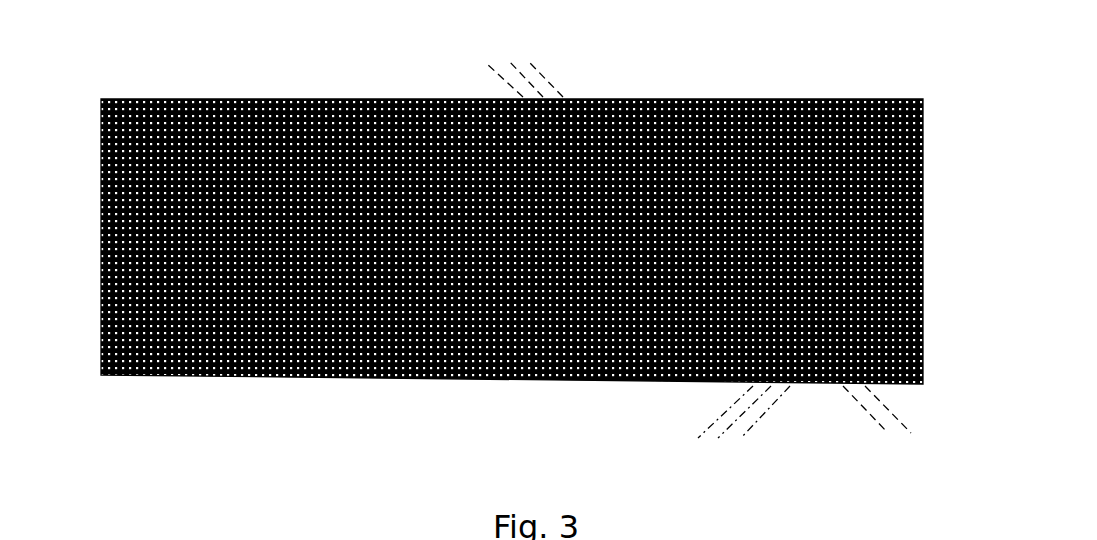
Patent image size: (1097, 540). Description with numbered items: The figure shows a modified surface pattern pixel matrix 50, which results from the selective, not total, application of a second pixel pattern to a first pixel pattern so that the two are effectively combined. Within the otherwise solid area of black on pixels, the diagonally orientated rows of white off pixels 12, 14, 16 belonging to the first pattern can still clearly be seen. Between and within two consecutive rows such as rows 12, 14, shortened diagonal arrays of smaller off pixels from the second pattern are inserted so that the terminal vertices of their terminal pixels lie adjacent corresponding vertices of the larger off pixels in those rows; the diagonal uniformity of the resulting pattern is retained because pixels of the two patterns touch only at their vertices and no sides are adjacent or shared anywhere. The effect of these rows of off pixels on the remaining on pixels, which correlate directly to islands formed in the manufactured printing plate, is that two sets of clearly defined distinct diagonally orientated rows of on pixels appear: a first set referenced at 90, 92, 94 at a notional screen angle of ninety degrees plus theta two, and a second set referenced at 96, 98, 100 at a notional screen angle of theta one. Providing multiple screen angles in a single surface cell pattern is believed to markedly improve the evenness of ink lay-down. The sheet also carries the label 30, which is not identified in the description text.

The diagonally orientated row of white off pixels 12 is at (98, 258).
The diagonally orientated row of white off pixels 14 is at (100, 240).
The diagonally orientated row of white off pixels 16 is at (100, 200).
The fabric 30 is at (97, 14).
The modified surface pattern pixel matrix 50 is at (122, 382).
The diagonally orientated row of on pixels 90 is at (912, 152).
The diagonally orientated row of on pixels 92 is at (912, 170).
The diagonally orientated row of on pixels 94 is at (912, 195).
The diagonally orientated row of on pixels 96 is at (494, 67).
The diagonally orientated row of on pixels 98 is at (862, 403).
The diagonally orientated row of on pixels 100 is at (548, 78).